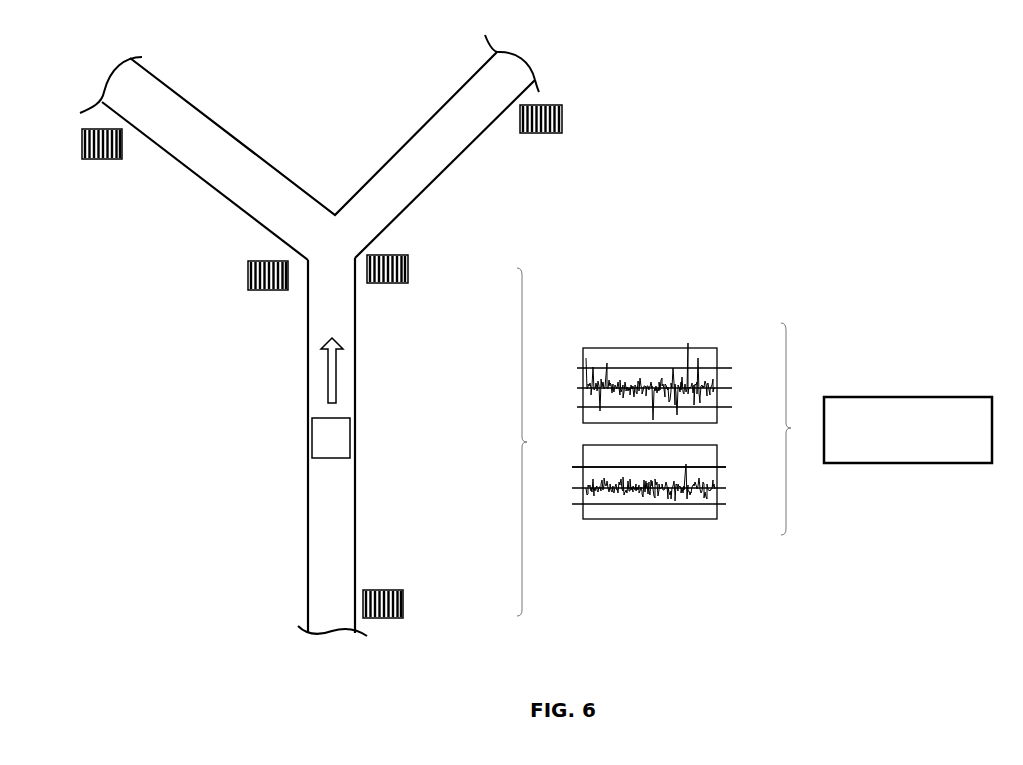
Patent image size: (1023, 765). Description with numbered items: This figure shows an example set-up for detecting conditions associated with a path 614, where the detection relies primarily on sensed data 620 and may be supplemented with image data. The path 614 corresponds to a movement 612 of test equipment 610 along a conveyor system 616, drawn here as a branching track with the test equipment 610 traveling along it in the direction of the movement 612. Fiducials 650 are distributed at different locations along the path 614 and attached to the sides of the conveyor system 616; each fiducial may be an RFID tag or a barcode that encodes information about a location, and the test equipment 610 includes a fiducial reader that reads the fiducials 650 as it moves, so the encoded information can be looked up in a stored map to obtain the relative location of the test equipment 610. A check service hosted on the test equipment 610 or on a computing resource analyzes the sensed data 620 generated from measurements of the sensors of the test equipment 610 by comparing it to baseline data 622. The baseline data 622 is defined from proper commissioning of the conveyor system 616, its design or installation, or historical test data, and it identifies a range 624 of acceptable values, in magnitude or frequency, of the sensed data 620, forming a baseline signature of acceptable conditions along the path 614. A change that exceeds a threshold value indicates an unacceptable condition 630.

The test equipment 610 is at (342, 449).
The movement 612 is at (333, 373).
The path 614 is at (335, 517).
The conveyor system 616 is at (191, 172).
The sensed data 620 is at (650, 520).
The baseline data 622 is at (649, 348).
The range 624 is at (720, 467).
The unacceptable condition 630 is at (908, 430).
The fiducials 650 is at (382, 590).